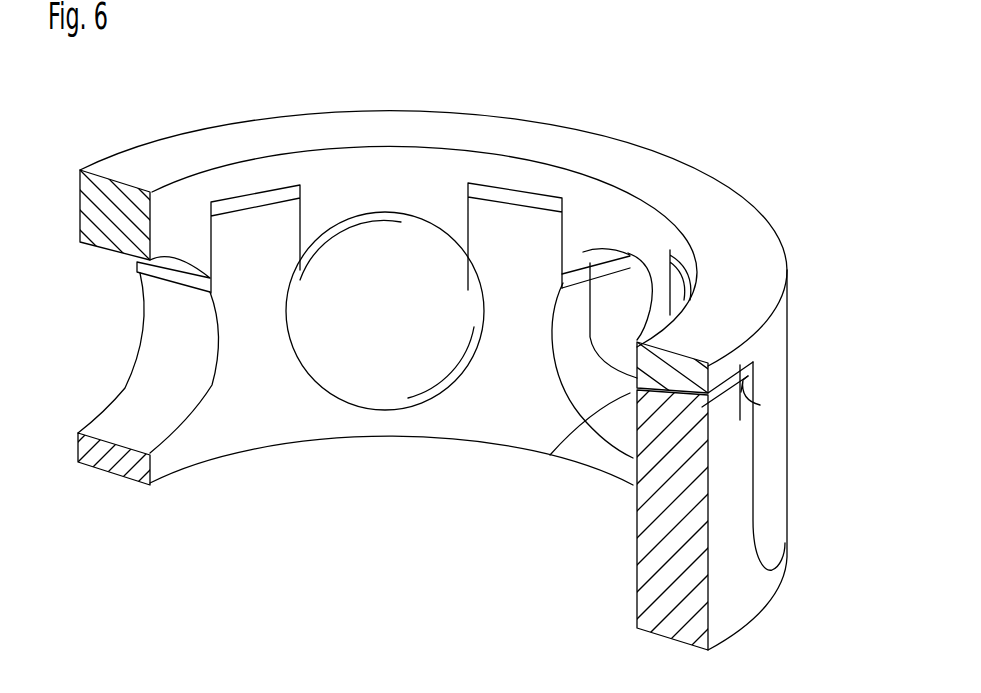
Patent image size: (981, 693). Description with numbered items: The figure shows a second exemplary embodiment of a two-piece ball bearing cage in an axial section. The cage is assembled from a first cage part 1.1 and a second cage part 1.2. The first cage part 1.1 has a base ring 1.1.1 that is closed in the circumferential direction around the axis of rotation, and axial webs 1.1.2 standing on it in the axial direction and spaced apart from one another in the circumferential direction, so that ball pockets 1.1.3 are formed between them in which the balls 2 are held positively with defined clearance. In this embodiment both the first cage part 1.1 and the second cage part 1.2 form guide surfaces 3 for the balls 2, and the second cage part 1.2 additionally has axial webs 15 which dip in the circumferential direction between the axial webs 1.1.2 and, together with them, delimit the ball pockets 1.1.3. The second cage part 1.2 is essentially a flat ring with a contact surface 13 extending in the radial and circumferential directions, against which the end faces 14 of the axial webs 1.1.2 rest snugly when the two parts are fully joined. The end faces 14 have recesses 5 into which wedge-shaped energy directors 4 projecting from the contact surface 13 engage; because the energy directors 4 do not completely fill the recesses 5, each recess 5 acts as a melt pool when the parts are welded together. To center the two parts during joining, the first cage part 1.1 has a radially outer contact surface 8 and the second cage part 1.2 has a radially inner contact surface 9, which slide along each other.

The first cage part 1.1 is at (243, 410).
The base ring 1.1.1 is at (335, 417).
The axial webs 1.1.2 is at (732, 480).
The ball pockets 1.1.3 is at (383, 332).
The second cage part 1.2 is at (150, 170).
The balls 2 is at (447, 365).
The guide surfaces 3 is at (322, 383).
The energy directors 4 is at (637, 390).
The recesses 5 is at (633, 455).
The radially outer contact surface 8 is at (716, 397).
The radially inner contact surface 9 is at (745, 390).
The contact surface 13 is at (588, 258).
The end faces 14 is at (740, 365).
The axial webs 15 is at (360, 190).